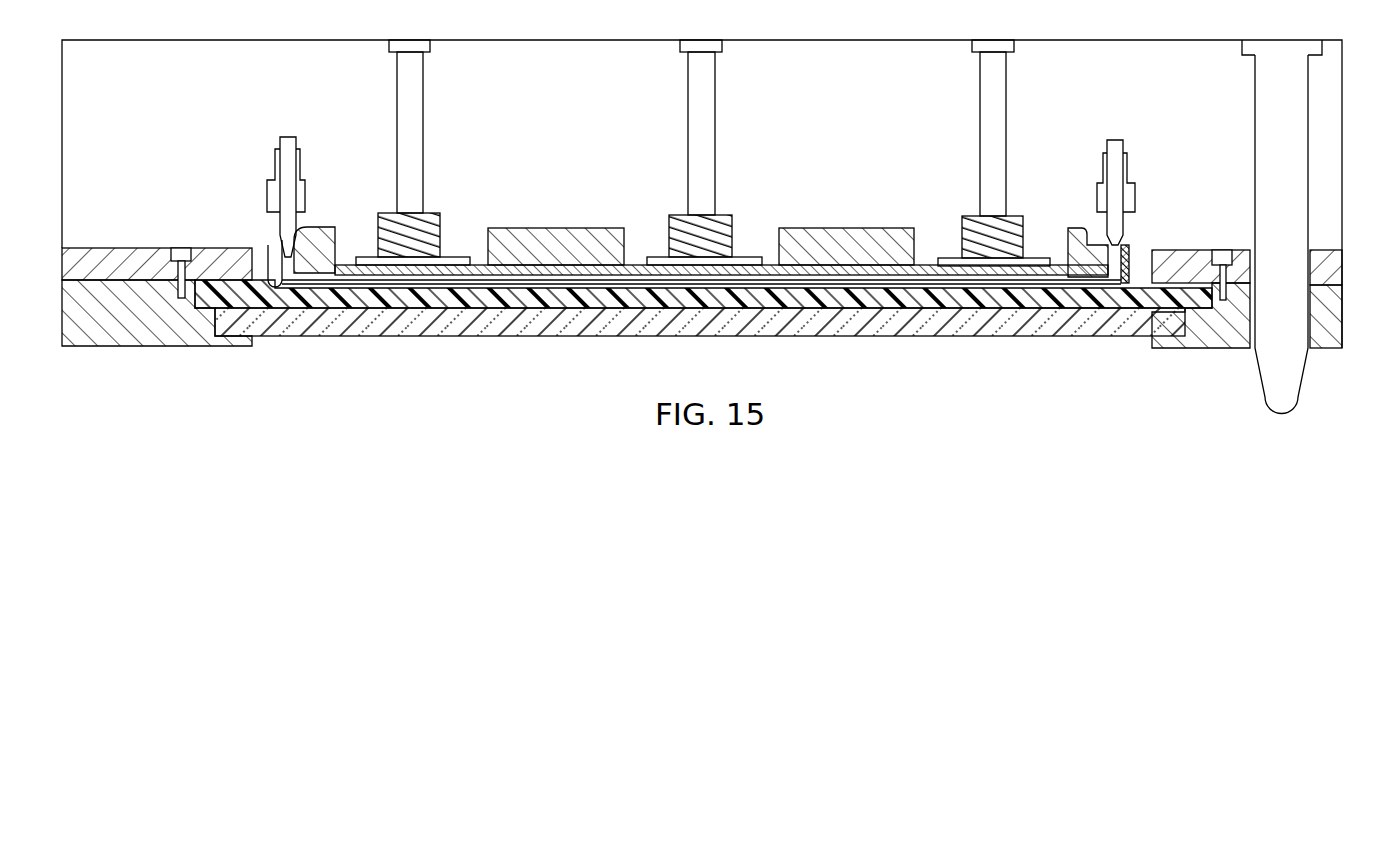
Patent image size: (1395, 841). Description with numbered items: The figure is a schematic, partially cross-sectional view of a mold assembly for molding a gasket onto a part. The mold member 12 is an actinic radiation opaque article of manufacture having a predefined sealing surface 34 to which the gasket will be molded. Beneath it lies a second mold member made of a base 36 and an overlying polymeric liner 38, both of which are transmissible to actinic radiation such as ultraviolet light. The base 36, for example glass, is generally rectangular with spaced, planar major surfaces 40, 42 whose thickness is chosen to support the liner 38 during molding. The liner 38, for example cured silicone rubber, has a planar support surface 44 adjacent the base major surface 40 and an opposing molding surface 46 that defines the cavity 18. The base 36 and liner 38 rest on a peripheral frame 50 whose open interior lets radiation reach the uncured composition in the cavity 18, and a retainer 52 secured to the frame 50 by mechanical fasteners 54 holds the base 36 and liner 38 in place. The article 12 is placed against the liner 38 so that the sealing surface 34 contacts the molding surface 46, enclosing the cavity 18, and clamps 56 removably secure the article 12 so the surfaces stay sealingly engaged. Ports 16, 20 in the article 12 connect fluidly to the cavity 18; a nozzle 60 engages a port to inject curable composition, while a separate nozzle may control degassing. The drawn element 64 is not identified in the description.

The mold member 12 is at (838, 235).
The port 16 is at (1115, 265).
The cavity 18 is at (693, 280).
The port 20 is at (288, 263).
The sealing surface 34 is at (268, 284).
The base 36 is at (265, 330).
The polymeric liner 38 is at (942, 305).
The major surface 40 is at (340, 303).
The major surface 42 is at (423, 337).
The support surface 44 is at (1030, 303).
The molding surface 46 is at (1112, 284).
The peripheral frame 50 is at (100, 330).
The retainer 52 is at (98, 248).
The mechanical fasteners 54 is at (178, 248).
The clamps 56 is at (446, 202).
The nozzle 60 is at (270, 192).
The tube 64 is at (1296, 120).